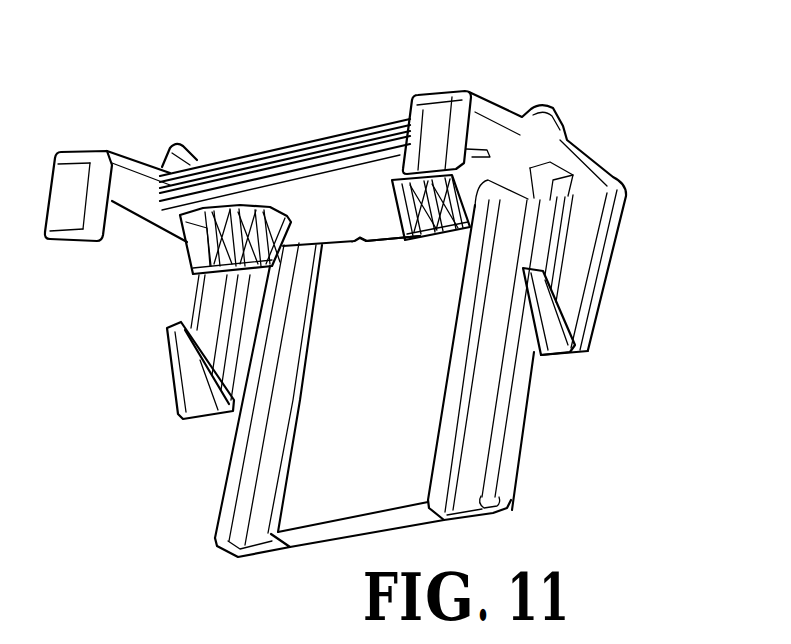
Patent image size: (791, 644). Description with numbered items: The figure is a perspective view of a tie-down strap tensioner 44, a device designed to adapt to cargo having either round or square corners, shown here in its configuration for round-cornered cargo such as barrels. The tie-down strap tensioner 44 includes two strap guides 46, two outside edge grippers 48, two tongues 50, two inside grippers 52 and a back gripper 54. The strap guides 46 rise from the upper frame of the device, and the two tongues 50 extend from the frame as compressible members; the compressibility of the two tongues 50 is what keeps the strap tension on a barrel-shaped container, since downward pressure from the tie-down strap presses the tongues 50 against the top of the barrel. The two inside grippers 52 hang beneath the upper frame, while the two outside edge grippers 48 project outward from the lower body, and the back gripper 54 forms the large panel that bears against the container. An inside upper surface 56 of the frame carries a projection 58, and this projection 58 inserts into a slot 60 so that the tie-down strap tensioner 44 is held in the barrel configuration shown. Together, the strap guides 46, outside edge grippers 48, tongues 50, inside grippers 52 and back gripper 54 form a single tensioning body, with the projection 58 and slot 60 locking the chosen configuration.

The tie-down strap tensioner 44 is at (186, 23).
The strap guide 46 is at (394, 202).
The outside edge gripper 48 is at (377, 343).
The tongue 50 is at (258, 149).
The inside gripper 52 is at (275, 256).
The back gripper 54 is at (380, 366).
The inside upper surface 56 is at (338, 217).
The projection 58 is at (374, 269).
The slot 60 is at (345, 259).